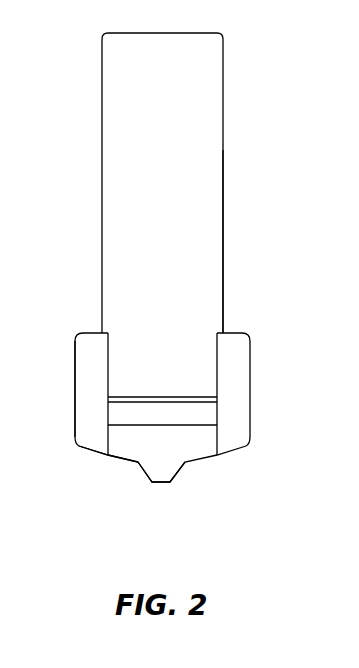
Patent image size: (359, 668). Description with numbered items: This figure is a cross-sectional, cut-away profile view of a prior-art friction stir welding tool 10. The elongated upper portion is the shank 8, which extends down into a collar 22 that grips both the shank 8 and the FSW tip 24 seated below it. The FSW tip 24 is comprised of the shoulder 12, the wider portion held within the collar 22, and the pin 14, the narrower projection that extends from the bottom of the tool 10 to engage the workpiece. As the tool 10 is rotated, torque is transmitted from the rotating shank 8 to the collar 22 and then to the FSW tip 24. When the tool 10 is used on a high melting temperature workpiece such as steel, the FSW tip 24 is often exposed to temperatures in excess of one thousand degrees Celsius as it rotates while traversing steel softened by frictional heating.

The shank 8 is at (207, 292).
The tool 10 is at (223, 240).
The shoulder 12 is at (203, 460).
The pin 14 is at (178, 475).
The collar 22 is at (75, 378).
The FSW tip 24 is at (113, 455).